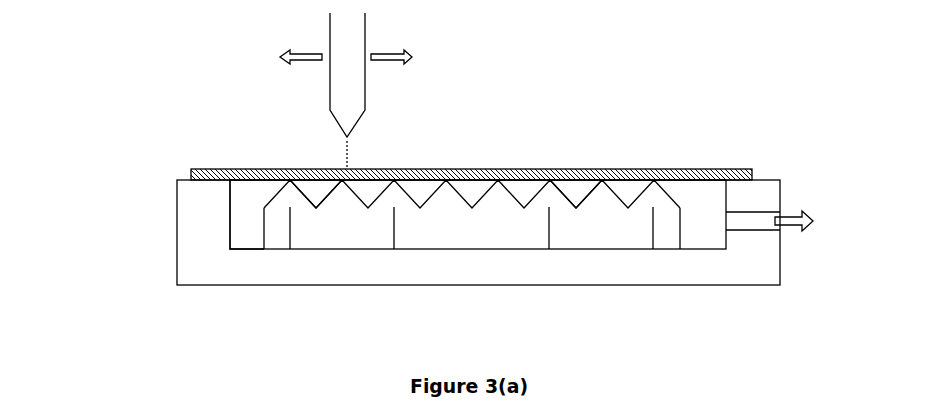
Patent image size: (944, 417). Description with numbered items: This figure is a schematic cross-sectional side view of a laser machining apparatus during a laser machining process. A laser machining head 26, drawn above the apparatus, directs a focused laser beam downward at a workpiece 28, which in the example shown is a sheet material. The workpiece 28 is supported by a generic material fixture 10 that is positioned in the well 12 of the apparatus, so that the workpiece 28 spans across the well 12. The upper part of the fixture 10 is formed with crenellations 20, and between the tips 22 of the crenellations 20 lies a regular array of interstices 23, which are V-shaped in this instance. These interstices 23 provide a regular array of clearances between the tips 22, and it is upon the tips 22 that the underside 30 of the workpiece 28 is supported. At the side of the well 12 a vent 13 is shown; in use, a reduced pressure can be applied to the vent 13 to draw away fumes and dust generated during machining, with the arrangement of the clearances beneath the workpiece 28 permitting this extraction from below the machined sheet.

The material fixture 10 is at (612, 232).
The well 12 is at (705, 236).
The vent 13 is at (812, 224).
The crenellations 20 is at (249, 199).
The tips 22 is at (292, 180).
The interstices 23 is at (318, 198).
The laser machining head 26 is at (353, 32).
The workpiece 28 is at (700, 172).
The underside 30 is at (708, 183).